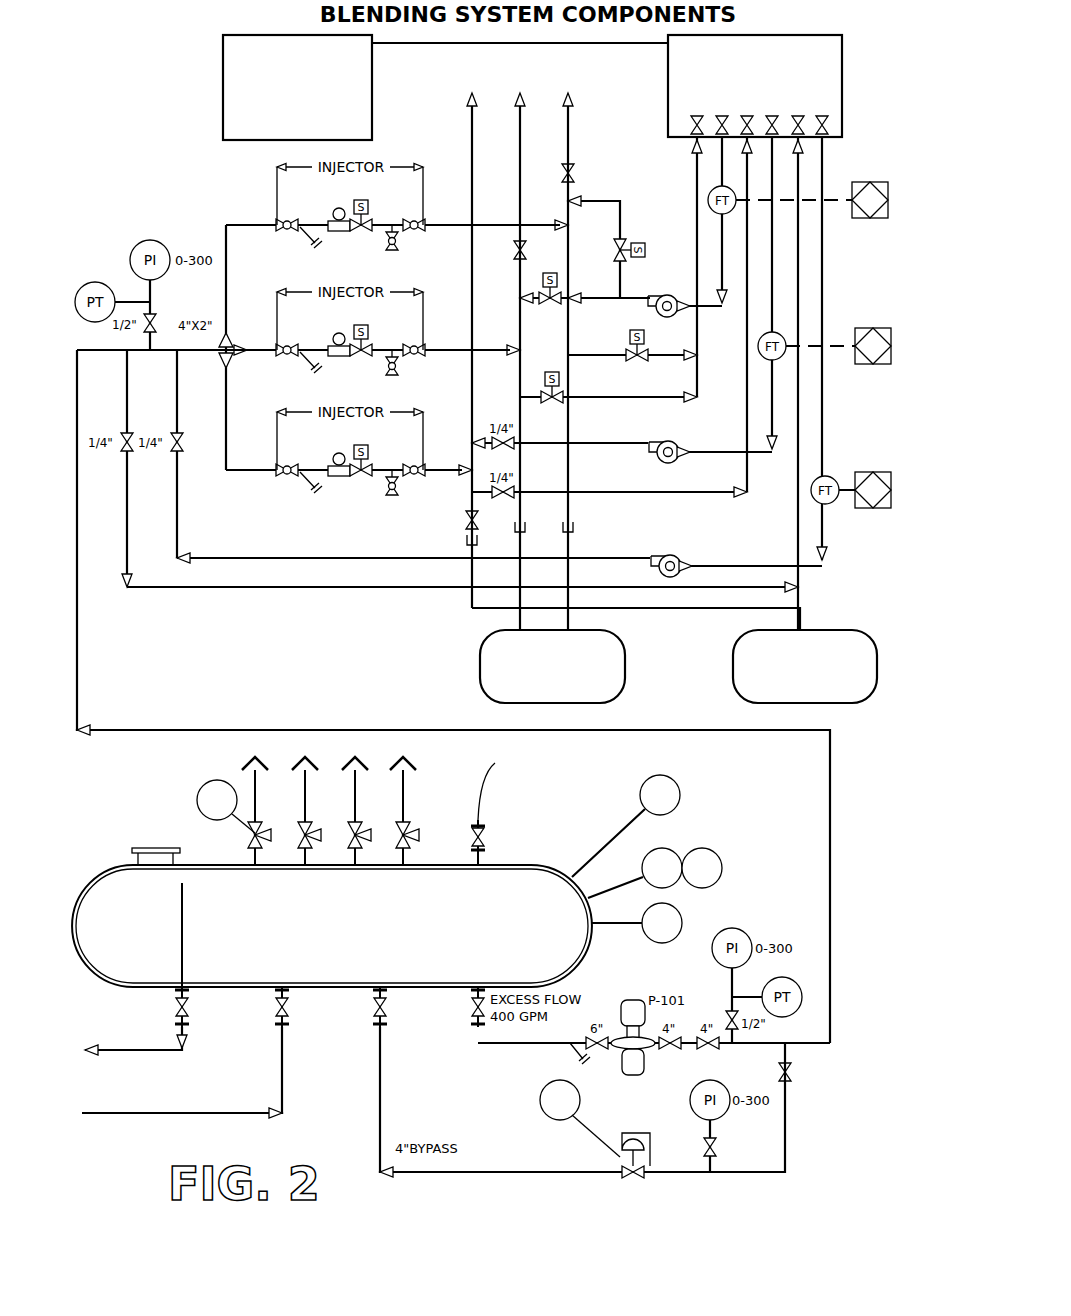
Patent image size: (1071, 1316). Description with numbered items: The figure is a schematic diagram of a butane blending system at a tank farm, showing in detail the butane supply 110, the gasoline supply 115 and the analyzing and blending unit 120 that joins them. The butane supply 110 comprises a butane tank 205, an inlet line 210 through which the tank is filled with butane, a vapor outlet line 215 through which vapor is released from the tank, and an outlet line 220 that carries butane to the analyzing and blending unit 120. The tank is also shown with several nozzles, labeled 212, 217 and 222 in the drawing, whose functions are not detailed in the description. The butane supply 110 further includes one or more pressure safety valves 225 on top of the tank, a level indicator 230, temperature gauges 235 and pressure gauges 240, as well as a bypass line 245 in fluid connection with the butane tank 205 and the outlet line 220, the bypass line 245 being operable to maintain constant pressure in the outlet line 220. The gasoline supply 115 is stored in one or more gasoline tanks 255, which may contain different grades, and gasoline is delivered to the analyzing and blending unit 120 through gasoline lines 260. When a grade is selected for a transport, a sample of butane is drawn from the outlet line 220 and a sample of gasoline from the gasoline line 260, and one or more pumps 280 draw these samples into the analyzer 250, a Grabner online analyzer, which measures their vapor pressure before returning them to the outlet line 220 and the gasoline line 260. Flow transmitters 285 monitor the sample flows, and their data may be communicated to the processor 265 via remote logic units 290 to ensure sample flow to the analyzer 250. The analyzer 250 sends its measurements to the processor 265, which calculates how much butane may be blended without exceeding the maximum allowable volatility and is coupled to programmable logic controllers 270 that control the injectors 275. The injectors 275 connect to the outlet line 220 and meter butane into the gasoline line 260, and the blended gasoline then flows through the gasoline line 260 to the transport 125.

The butane supply 110 is at (168, 820).
The gasoline supply 115 is at (403, 663).
The analyzing and blending unit 120 is at (195, 163).
The transport 125 is at (462, 84).
The butane tank 205 is at (508, 860).
The inlet line 210 is at (145, 1115).
The fill nozzle 212 is at (275, 1001).
The vapor outlet line 215 is at (145, 1052).
The drain nozzle 217 is at (175, 1001).
The outlet line 220 is at (247, 728).
The outlet nozzle with excess flow valve 222 is at (471, 1001).
The pressure safety valves 225 is at (412, 830).
The level indicator 230 is at (719, 854).
The temperature gauges 235 is at (679, 783).
The pressure gauges 240 is at (680, 938).
The bypass line 245 is at (558, 1168).
The analyzer 250 is at (745, 34).
The gasoline tanks 255 is at (487, 696).
The gasoline lines 260 is at (523, 620).
The processor 265 is at (288, 34).
The programmable logic controllers 270 is at (307, 212).
The injectors 275 is at (424, 141).
The pumps 280 is at (683, 290).
The flow transmitters 285 is at (708, 200).
The remote logic units 290 is at (887, 160).